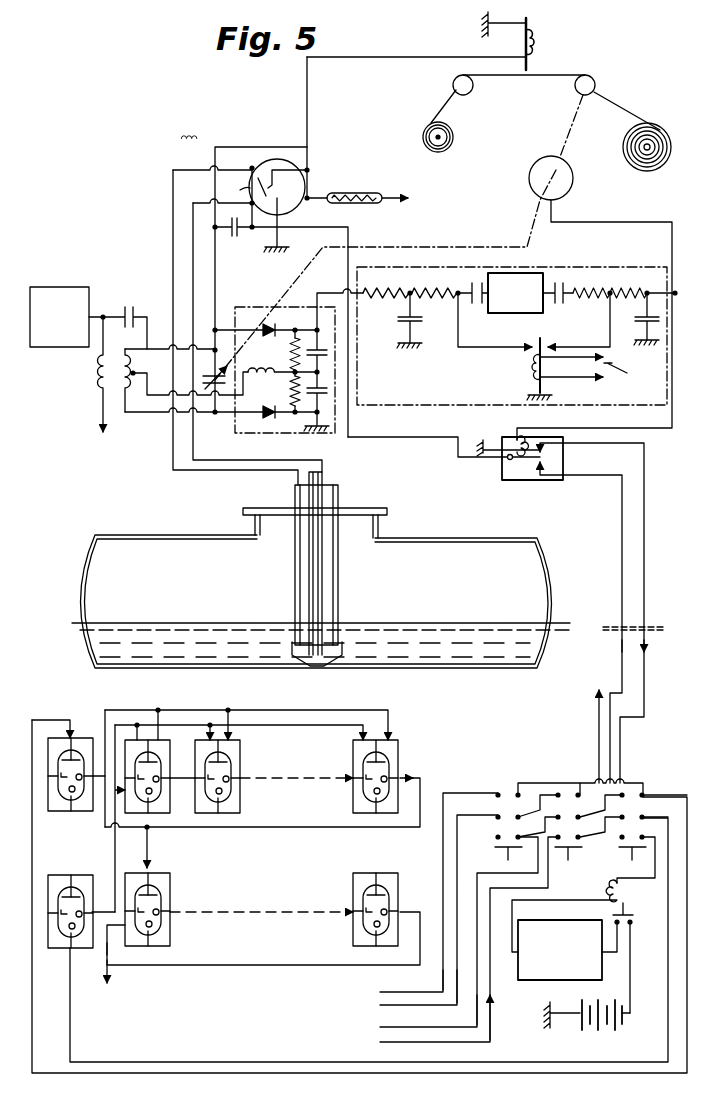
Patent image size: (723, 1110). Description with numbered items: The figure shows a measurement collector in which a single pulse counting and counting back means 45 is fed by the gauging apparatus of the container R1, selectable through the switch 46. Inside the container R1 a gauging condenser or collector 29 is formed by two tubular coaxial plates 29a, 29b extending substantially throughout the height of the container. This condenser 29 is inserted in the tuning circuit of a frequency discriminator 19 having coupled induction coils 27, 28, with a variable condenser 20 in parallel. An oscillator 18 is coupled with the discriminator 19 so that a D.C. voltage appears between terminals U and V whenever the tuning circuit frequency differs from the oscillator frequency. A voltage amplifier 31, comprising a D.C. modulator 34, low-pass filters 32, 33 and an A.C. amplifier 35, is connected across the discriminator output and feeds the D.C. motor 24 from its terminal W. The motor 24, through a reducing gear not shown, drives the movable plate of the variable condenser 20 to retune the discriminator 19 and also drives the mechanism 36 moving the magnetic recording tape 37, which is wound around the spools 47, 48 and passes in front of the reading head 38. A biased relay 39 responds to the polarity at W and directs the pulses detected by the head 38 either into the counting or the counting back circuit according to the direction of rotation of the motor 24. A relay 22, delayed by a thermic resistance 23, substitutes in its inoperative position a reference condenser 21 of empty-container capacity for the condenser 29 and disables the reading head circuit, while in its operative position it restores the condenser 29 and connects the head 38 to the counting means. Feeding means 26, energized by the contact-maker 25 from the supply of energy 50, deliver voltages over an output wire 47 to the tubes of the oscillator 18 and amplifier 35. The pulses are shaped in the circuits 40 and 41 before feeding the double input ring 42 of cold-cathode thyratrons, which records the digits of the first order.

The oscillator 18 is at (49, 292).
The frequency discriminator 19 is at (300, 438).
The variable condenser 20 is at (218, 401).
The reference condenser 21 is at (237, 240).
The relay 22 is at (305, 182).
The thermic resistance 23 is at (370, 190).
The electric motor 24 is at (567, 190).
The contact-maker 25 is at (630, 918).
The feeding means 26 is at (537, 975).
The induction coil 27 is at (97, 376).
The induction coil 28 is at (133, 408).
The gauging condenser 29 is at (324, 569).
The tubular coaxial plate 29a is at (297, 556).
The tubular coaxial plate 29b is at (326, 572).
The voltage amplifier 31 is at (456, 407).
The low-pass filter 32 is at (390, 297).
The low-pass filter 33 is at (650, 290).
The D.C. modulator 34 is at (533, 373).
The A.C. amplifier 35 is at (522, 306).
The tape driving mechanism 36 is at (596, 80).
The magnetic recording tape 37 is at (556, 75).
The reading head 38 is at (533, 44).
The biased relay 39 is at (510, 478).
The pulse shaping circuit 40 is at (80, 740).
The pulse shaping circuit 41 is at (66, 875).
The double input ring 42 is at (243, 762).
The pulse counting and counting back means 45 is at (270, 710).
The switch 46 is at (563, 782).
The spool 47 is at (662, 130).
The spool 48 is at (447, 149).
The supply of energy 50 is at (624, 1021).
The container R1 is at (92, 630).